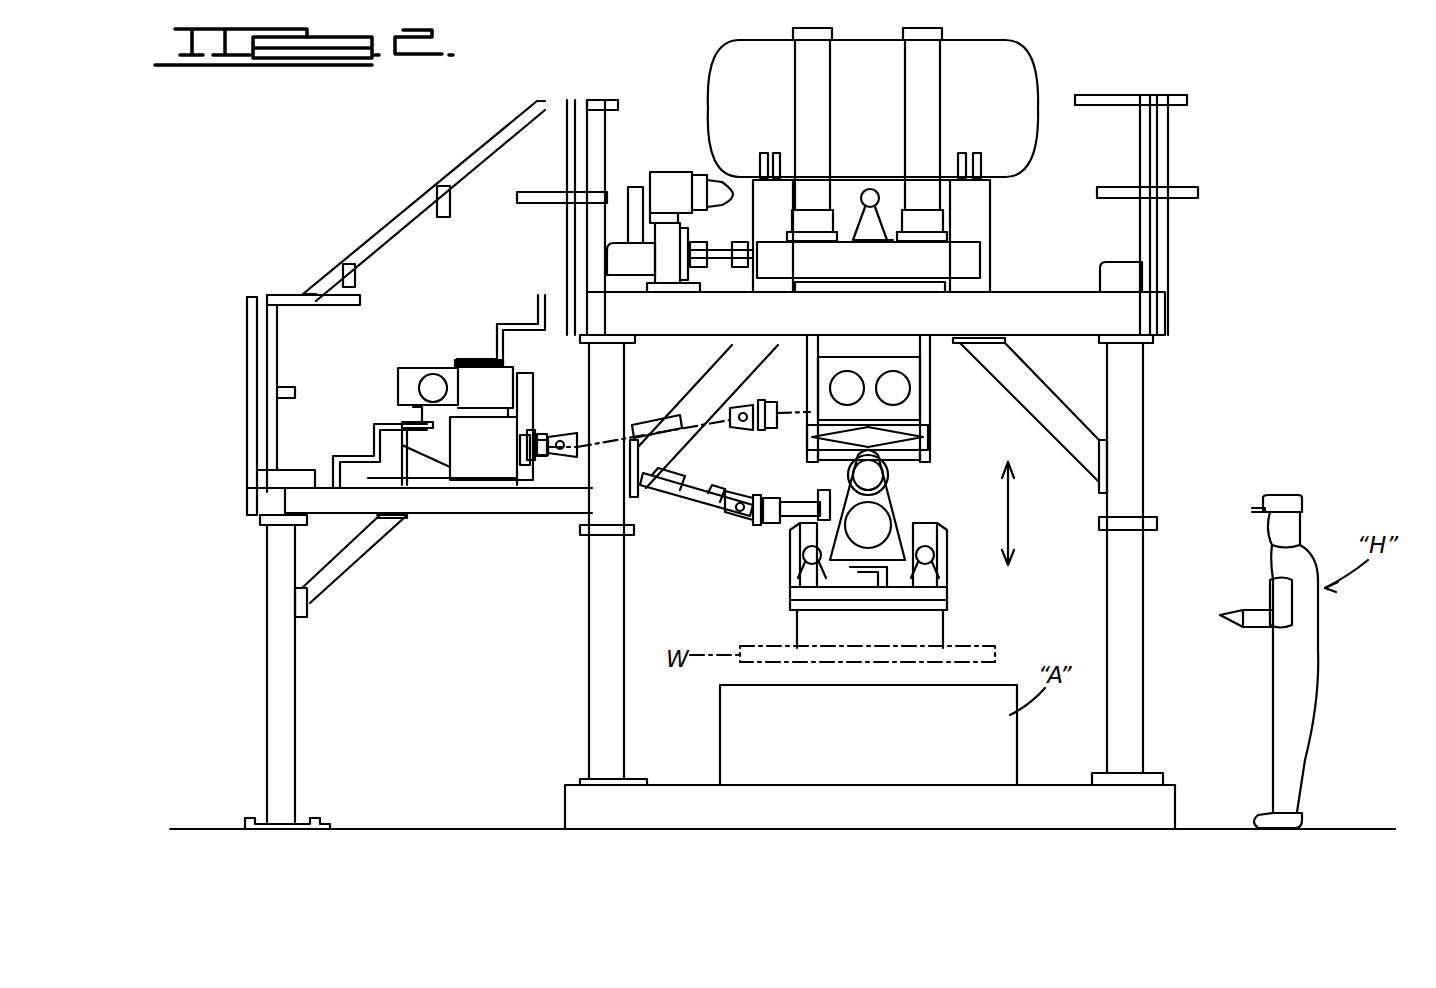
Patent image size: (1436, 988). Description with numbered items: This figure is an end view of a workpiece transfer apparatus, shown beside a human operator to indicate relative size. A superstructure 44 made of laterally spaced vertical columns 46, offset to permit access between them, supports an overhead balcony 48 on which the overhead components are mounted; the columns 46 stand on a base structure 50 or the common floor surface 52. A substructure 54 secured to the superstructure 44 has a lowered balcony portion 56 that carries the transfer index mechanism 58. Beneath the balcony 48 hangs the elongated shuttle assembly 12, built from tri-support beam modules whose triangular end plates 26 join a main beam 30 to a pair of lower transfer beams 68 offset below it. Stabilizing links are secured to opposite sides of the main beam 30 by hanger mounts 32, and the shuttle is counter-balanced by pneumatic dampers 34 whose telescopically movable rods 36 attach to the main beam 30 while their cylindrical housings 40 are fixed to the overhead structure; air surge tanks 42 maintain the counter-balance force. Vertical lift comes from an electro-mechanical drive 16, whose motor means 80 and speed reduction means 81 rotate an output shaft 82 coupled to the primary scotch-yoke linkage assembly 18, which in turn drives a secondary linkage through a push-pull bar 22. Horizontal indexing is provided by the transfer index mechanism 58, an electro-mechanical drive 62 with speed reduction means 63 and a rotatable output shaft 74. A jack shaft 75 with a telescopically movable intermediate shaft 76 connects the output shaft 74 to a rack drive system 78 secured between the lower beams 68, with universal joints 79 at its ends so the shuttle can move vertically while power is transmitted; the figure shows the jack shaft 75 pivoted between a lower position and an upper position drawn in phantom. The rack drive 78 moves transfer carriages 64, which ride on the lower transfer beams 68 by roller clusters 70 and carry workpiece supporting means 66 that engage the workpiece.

The shuttle assembly 12 is at (948, 515).
The electro-mechanical drive 16 is at (674, 164).
The primary linkage assembly 18 is at (850, 212).
The push-pull bar 22 is at (876, 190).
The triangular end plates 26 is at (900, 497).
The main beam 30 is at (892, 473).
The hanger mounts 32 is at (925, 455).
The pneumatic dampers 34 is at (905, 82).
The telescopically movable rods 36 is at (805, 380).
The cylindrical housing 40 is at (905, 115).
The air surge tanks 42 is at (1010, 57).
The superstructure 44 is at (1178, 428).
The vertical columns 46 is at (1135, 458).
The overhead balcony 48 is at (1045, 300).
The base structure 50 is at (1175, 795).
The floor surface 52 is at (407, 828).
The substructure 54 is at (258, 563).
The lowered balcony portion 56 is at (432, 500).
The transfer index mechanism 58 is at (413, 365).
The electro-mechanical drive 62 is at (505, 377).
The speed reduction means 63 is at (480, 462).
The transfer carriages 64 is at (800, 598).
The workpiece supporting means 66 is at (790, 630).
The lower transfer beams 68 is at (934, 558).
The roller clusters 70 is at (950, 537).
The output shaft 74 is at (542, 470).
The jack shaft 75 is at (637, 425).
The intermediate shaft 76 is at (690, 425).
The rack drive system 78 is at (818, 497).
The universal joints 79 is at (565, 430).
The motor means 80 is at (668, 180).
The speed reduction means 81 is at (612, 255).
The output shaft 82 is at (720, 262).